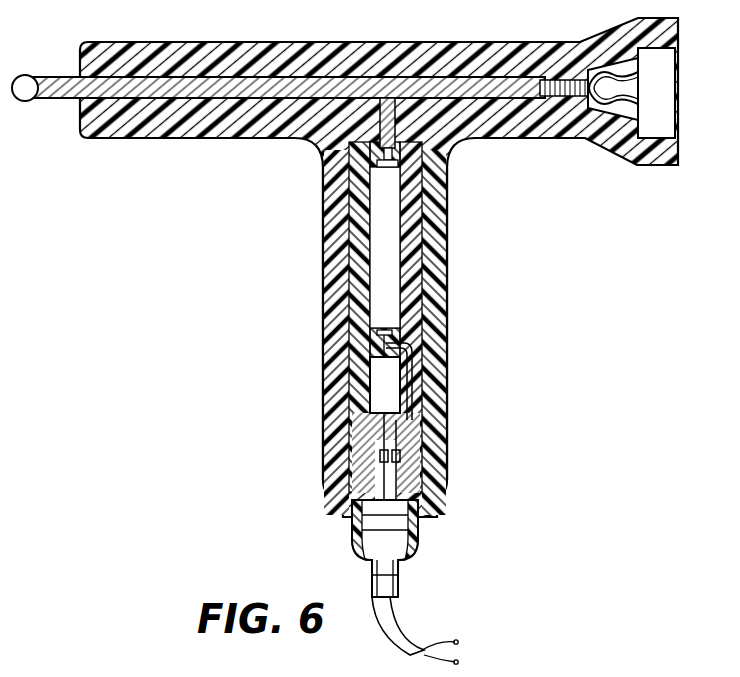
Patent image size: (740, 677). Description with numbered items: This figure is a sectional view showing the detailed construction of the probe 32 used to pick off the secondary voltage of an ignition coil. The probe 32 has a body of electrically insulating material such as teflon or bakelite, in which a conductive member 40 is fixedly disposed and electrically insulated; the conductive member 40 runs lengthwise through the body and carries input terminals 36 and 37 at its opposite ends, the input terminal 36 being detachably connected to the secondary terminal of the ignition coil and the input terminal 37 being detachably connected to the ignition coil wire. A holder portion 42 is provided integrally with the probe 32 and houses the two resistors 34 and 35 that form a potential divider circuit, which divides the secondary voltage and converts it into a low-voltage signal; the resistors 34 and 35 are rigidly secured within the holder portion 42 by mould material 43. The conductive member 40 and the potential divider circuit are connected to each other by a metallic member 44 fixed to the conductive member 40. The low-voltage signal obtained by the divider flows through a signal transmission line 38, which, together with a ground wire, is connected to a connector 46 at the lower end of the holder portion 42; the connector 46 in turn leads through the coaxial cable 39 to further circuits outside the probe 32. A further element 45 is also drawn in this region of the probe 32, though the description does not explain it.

The probe 32 is at (425, 43).
The resistor 34 is at (400, 253).
The resistor 35 is at (370, 397).
The input terminal 36 is at (26, 102).
The input terminal 37 is at (626, 82).
The signal transmission line 38 is at (412, 417).
The coaxial cable 39 is at (397, 628).
The conductive member 40 is at (225, 82).
The holder portion 42 is at (330, 264).
The mould material 43 is at (355, 356).
The metallic member 44 is at (380, 128).
The wires 45 is at (384, 445).
The connector 46 is at (355, 540).